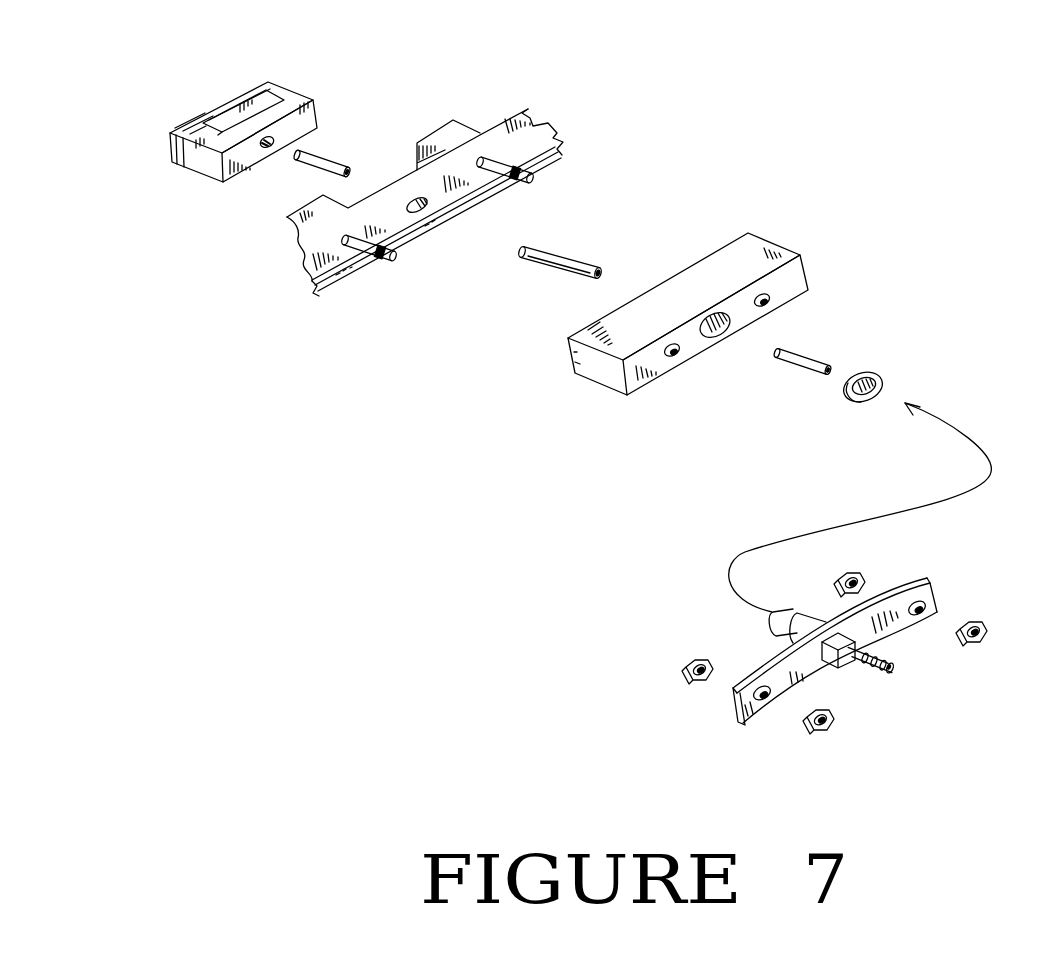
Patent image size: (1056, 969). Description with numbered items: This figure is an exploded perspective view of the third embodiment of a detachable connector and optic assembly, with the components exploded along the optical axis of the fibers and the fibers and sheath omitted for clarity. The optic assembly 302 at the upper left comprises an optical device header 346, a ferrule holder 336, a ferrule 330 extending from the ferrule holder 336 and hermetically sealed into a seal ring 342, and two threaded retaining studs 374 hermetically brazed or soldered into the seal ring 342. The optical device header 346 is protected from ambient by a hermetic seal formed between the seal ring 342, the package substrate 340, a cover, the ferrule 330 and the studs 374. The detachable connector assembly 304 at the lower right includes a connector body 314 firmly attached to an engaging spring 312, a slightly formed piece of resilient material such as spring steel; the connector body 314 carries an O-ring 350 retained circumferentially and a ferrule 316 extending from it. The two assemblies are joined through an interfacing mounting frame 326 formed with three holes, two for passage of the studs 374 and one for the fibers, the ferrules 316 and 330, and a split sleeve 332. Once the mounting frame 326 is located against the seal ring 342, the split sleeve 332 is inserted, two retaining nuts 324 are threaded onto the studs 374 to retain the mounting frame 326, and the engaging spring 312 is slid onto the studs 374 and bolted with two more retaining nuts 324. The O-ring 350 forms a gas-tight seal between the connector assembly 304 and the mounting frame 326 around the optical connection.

The optic assembly 302 is at (443, 54).
The detachable connector assembly 304 is at (626, 757).
The engaging spring 312 is at (807, 683).
The connector body 314 is at (893, 665).
The ferrule 316 is at (813, 375).
The retaining nuts 324 is at (845, 570).
The mounting frame 326 is at (788, 252).
The ferrule 330 is at (307, 168).
The split sleeve 332 is at (588, 261).
The ferrule holder 336 is at (283, 97).
The package substrate 340 is at (330, 294).
The seal ring 342 is at (502, 123).
The optical device header 346 is at (240, 93).
The O-ring 350 is at (867, 375).
The threaded retaining studs 374 is at (532, 178).